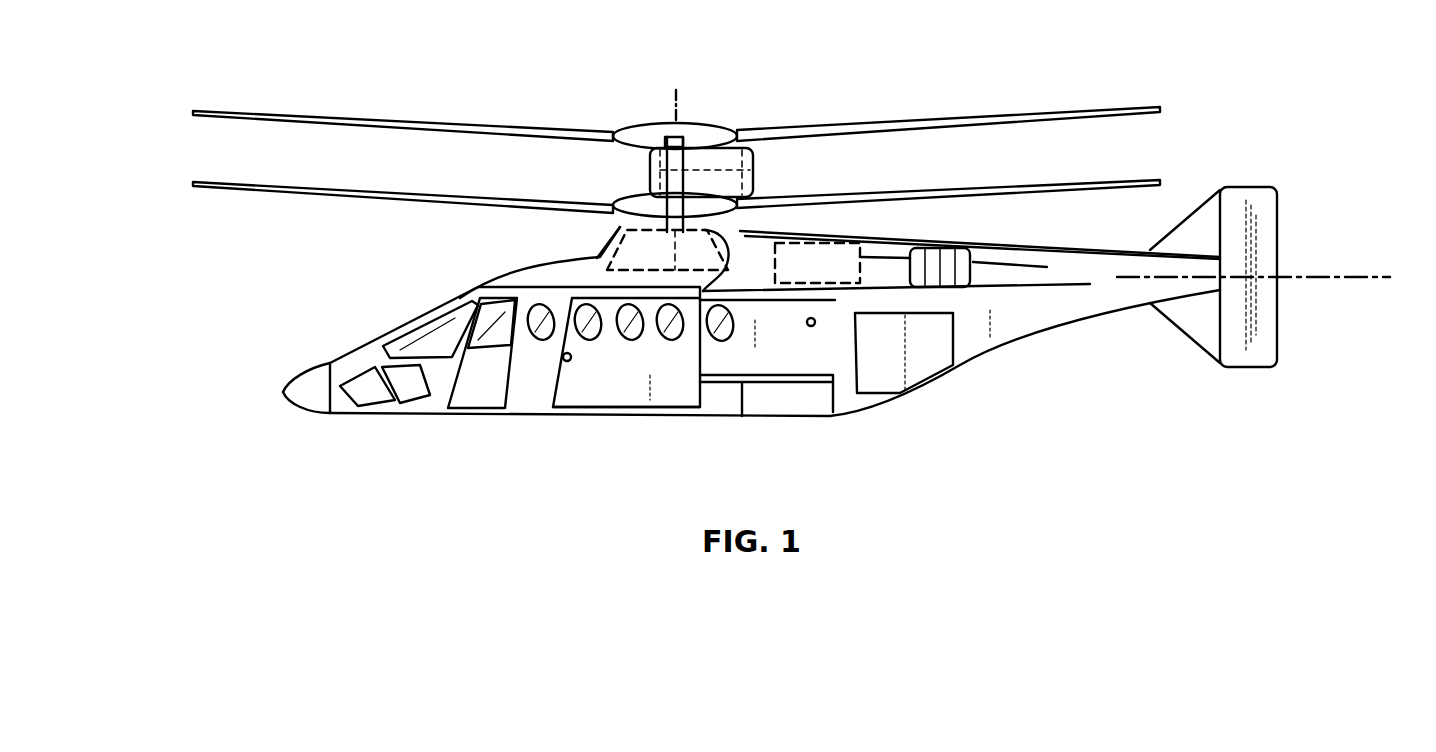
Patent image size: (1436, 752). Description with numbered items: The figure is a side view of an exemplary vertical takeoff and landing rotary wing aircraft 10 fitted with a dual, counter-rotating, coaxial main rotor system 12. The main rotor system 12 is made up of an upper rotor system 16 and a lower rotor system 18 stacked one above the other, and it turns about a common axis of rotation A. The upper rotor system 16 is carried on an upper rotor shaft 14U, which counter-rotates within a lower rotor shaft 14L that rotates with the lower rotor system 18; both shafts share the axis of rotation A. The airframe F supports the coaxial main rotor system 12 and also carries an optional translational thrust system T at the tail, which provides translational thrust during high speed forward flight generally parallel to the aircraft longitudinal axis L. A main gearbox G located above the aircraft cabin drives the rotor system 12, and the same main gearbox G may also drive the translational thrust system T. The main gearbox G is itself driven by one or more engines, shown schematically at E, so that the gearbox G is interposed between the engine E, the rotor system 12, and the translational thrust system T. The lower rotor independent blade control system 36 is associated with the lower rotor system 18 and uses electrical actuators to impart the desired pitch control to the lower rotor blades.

The rotary wing aircraft 10 is at (834, 66).
The main rotor system 12 is at (720, 117).
The upper rotor system 16 is at (746, 124).
The lower rotor independent blade control system 36 is at (592, 151).
The lower rotor system 18 is at (600, 222).
The upper rotor shaft 14U is at (690, 172).
The lower rotor shaft 14L is at (802, 162).
The axis of rotation A is at (680, 102).
The main gearbox G is at (658, 256).
The engine E is at (817, 263).
The airframe F is at (626, 387).
The translational thrust system T is at (1266, 162).
The aircraft longitudinal axis L is at (1317, 280).